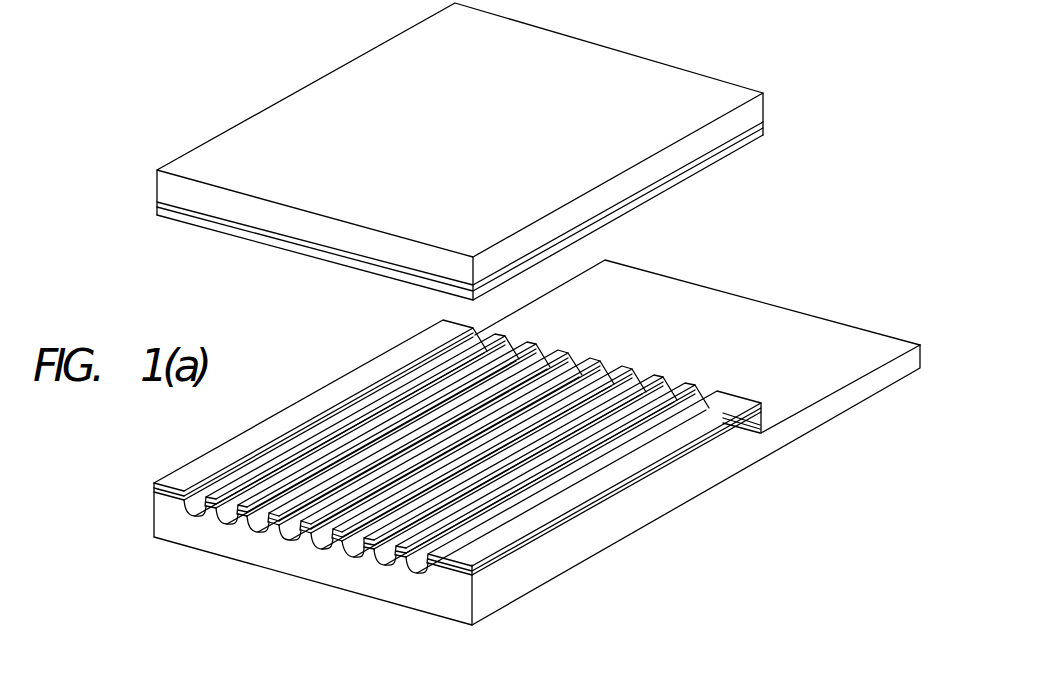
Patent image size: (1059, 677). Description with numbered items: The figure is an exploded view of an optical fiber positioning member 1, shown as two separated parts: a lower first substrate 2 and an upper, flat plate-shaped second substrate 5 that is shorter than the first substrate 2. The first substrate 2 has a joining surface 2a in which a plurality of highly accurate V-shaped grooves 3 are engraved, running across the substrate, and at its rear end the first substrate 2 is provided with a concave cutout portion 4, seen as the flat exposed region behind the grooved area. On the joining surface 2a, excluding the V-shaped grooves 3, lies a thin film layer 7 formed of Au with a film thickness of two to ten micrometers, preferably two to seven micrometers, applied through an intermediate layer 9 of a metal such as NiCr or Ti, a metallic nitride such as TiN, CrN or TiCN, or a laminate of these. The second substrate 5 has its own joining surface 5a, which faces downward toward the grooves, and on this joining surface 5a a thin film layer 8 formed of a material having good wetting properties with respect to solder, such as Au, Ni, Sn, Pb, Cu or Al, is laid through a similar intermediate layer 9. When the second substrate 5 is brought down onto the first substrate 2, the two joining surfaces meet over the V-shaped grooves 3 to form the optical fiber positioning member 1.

The optical fiber positioning member 1 is at (840, 140).
The first substrate 2 is at (717, 477).
The joining surface 2a is at (637, 482).
The V-shaped grooves 3 is at (417, 575).
The concave cutout portion 4 is at (853, 370).
The second substrate 5 is at (652, 75).
The joining surface 5a is at (257, 223).
The thin film layer 7 is at (575, 500).
The thin film layer 8 is at (333, 260).
The intermediate layer 9 is at (295, 242).